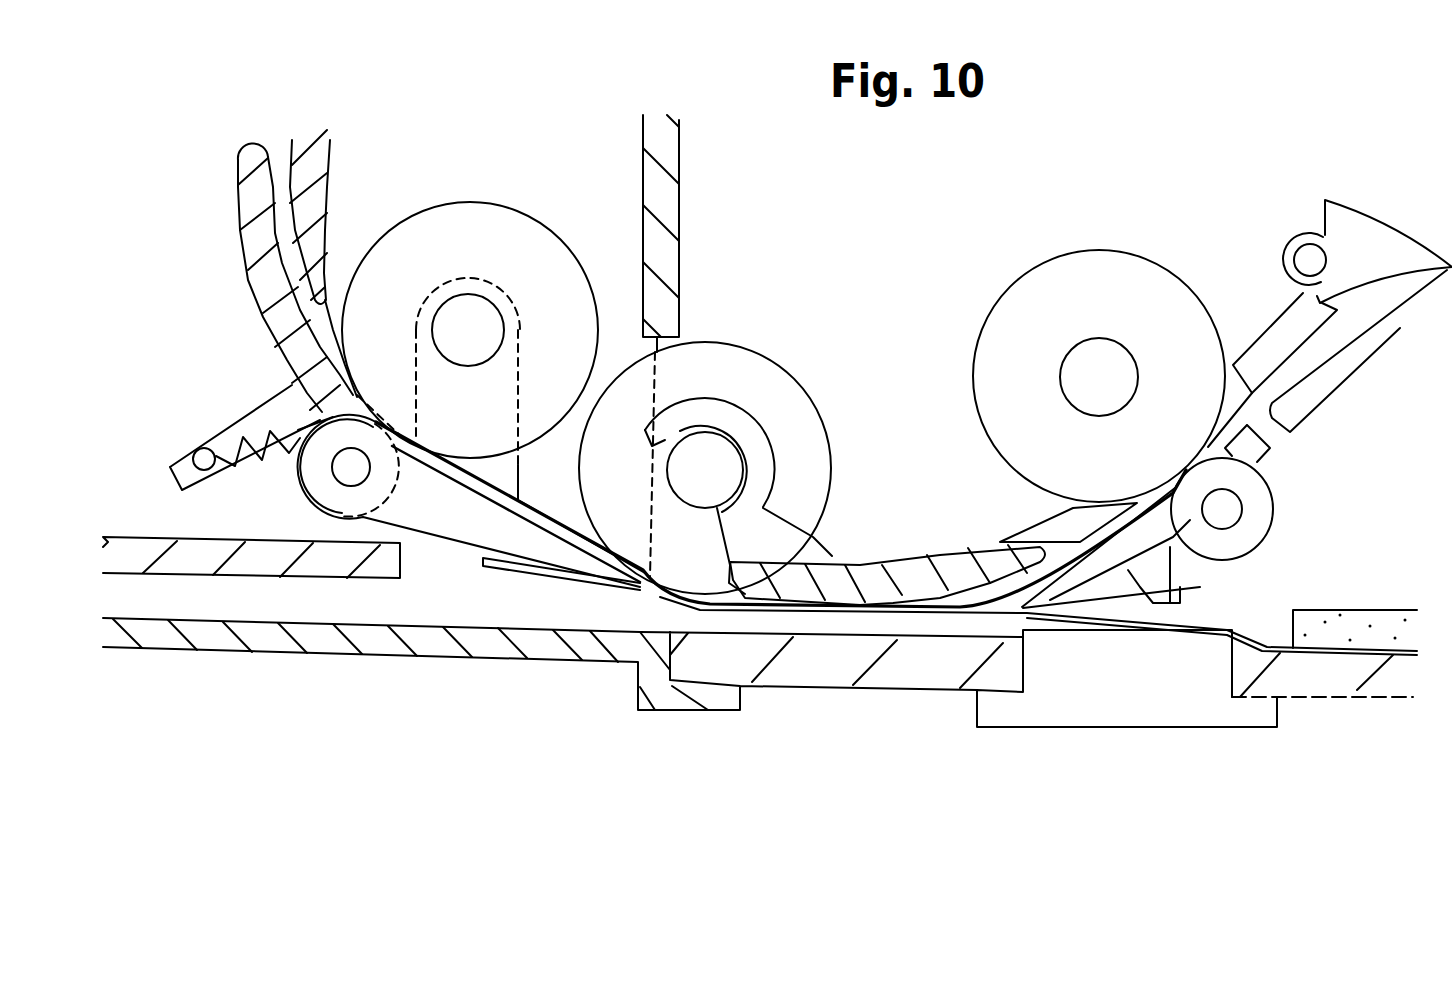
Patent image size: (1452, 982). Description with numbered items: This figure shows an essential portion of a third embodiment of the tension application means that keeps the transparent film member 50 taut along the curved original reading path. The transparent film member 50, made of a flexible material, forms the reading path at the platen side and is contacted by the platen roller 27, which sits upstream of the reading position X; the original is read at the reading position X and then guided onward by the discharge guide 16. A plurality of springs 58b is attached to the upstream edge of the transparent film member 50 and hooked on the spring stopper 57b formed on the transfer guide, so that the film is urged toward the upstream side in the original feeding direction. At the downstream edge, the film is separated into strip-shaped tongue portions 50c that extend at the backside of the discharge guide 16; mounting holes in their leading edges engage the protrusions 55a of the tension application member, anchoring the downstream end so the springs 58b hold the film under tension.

The platen roller 27 is at (745, 378).
The transparent film member 50 is at (480, 505).
The tongue portions 50c is at (1125, 600).
The discharge guide 16 is at (1062, 590).
The protrusions 55a is at (1158, 577).
The spring stopper 57b is at (200, 450).
The springs 58b is at (248, 452).
The reading position X is at (808, 612).